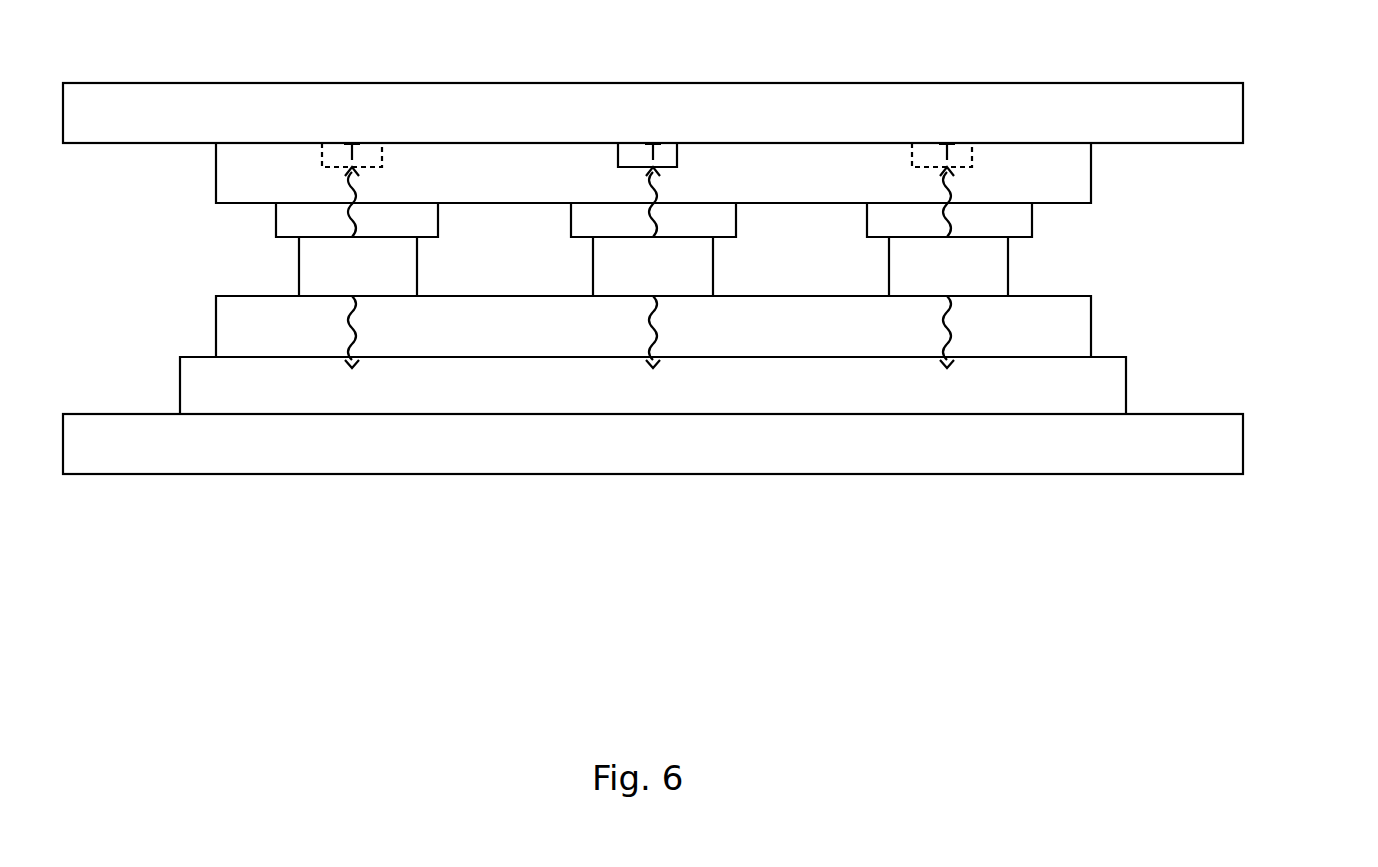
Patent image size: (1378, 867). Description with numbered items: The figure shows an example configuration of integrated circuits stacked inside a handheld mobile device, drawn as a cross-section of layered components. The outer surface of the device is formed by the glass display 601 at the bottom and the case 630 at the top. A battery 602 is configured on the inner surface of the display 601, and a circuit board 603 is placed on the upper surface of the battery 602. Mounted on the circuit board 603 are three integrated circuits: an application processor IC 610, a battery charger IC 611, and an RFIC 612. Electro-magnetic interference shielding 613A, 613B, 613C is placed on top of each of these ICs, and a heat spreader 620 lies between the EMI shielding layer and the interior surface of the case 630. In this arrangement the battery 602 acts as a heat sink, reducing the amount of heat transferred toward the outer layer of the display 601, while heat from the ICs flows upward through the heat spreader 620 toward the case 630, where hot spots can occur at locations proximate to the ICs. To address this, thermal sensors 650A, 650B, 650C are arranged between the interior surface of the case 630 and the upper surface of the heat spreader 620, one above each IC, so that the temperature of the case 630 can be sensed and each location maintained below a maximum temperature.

The case 630 is at (1243, 113).
The heat spreader 620 is at (1091, 168).
The thermal sensor 650A is at (376, 160).
The thermal sensor 650B is at (673, 160).
The thermal sensor 650C is at (968, 160).
The EMI shielding 613A is at (438, 214).
The EMI shielding 613B is at (736, 214).
The EMI shielding 613C is at (1032, 214).
The application processor IC 610 is at (417, 268).
The battery charger IC 611 is at (713, 268).
The RFIC 612 is at (1008, 268).
The circuit board 603 is at (1091, 320).
The battery 602 is at (1126, 382).
The glass display 601 is at (1243, 444).